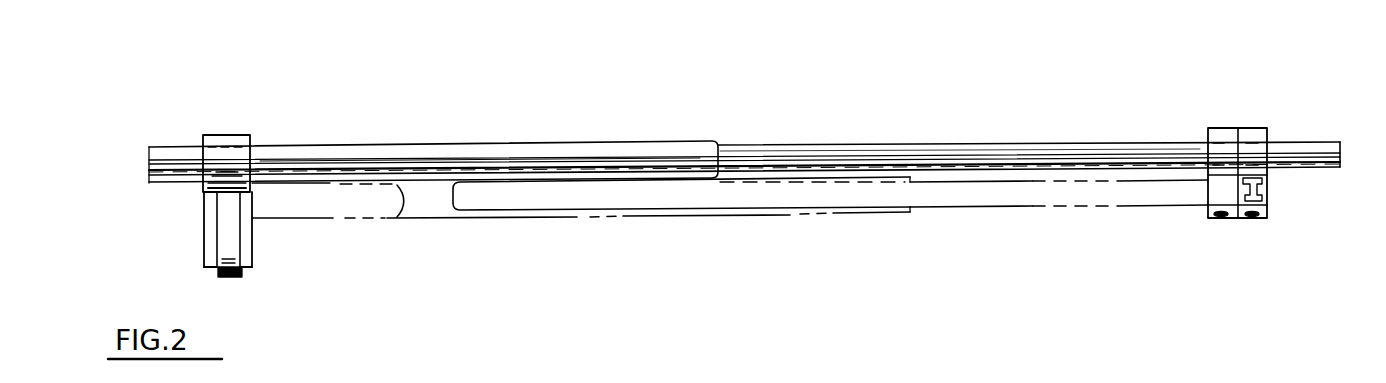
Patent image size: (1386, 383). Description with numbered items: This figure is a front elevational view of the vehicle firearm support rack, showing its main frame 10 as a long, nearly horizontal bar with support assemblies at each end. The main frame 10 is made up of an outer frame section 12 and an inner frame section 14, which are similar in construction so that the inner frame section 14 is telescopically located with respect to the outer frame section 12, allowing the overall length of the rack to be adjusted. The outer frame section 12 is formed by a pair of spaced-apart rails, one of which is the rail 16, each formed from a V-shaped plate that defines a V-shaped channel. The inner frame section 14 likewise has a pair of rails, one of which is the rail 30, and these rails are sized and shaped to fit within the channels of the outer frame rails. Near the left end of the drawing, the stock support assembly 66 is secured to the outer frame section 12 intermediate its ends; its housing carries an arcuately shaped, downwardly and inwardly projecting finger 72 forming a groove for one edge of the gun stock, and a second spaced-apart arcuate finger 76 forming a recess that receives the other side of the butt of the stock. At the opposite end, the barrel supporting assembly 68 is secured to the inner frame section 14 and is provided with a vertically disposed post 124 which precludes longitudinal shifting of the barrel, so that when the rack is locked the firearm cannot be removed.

The main frame 10 is at (765, 107).
The outer frame section 12 is at (512, 138).
The inner frame section 14 is at (948, 144).
The rail 16 is at (375, 158).
The rail 30 is at (1082, 149).
The stock support assembly 66 is at (242, 127).
The barrel supporting assembly 68 is at (1240, 122).
The finger 72 is at (204, 220).
The finger 76 is at (228, 215).
The post 124 is at (1263, 190).